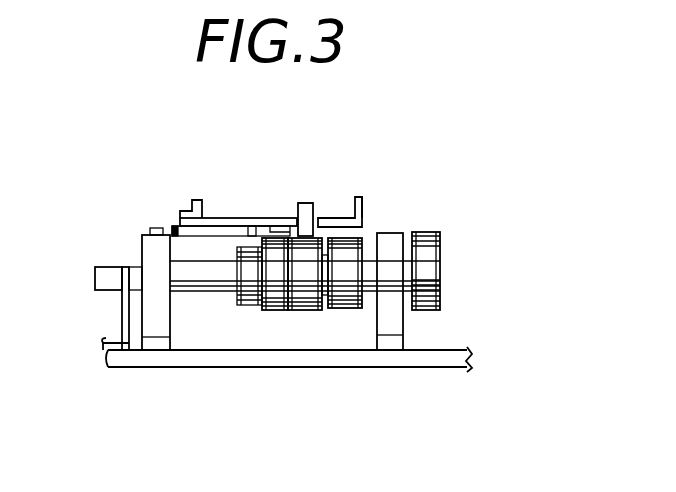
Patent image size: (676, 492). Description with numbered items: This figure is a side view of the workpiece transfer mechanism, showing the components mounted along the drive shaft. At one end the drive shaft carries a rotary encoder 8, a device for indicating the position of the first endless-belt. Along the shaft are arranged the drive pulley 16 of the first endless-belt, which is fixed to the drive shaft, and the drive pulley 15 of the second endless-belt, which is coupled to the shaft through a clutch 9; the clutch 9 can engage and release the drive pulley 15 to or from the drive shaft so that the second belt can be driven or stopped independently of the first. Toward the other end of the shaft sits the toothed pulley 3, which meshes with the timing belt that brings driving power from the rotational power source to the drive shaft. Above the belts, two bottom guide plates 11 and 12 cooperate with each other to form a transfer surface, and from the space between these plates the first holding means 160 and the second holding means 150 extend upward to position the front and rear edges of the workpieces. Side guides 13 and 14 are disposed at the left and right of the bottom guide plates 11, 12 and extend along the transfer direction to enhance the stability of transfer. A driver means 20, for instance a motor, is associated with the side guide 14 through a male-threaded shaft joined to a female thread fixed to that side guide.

The pulley 3 is at (425, 232).
The rotary encoder 8 is at (113, 275).
The clutch 9 is at (353, 313).
The bottom guide plate 11 is at (337, 218).
The bottom guide plate 12 is at (237, 222).
The side guide 13 is at (362, 205).
The side guide 14 is at (190, 200).
The drive pulley 15 is at (302, 313).
The drive pulley 16 is at (272, 313).
The driver means 20 is at (153, 228).
The second holding means 150 is at (308, 205).
The first holding means 160 is at (305, 198).